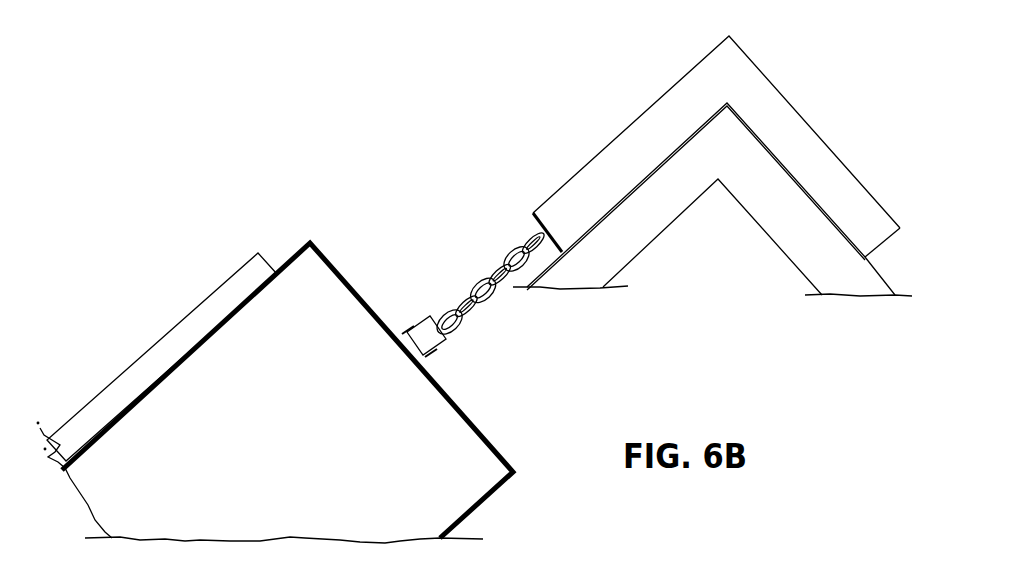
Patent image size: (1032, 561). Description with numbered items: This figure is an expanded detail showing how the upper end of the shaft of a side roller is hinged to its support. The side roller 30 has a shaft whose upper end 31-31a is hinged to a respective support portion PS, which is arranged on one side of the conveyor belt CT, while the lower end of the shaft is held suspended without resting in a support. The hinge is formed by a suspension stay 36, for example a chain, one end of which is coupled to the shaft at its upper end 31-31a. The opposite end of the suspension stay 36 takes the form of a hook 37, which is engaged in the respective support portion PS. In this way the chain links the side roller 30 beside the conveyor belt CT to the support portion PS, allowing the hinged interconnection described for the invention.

The conveyor belt CT is at (162, 330).
The side roller 30 is at (291, 250).
The shaft upper end 31-31a is at (422, 338).
The suspension stay 36 is at (485, 312).
The hook 37 is at (620, 125).
The support portion PS is at (770, 250).